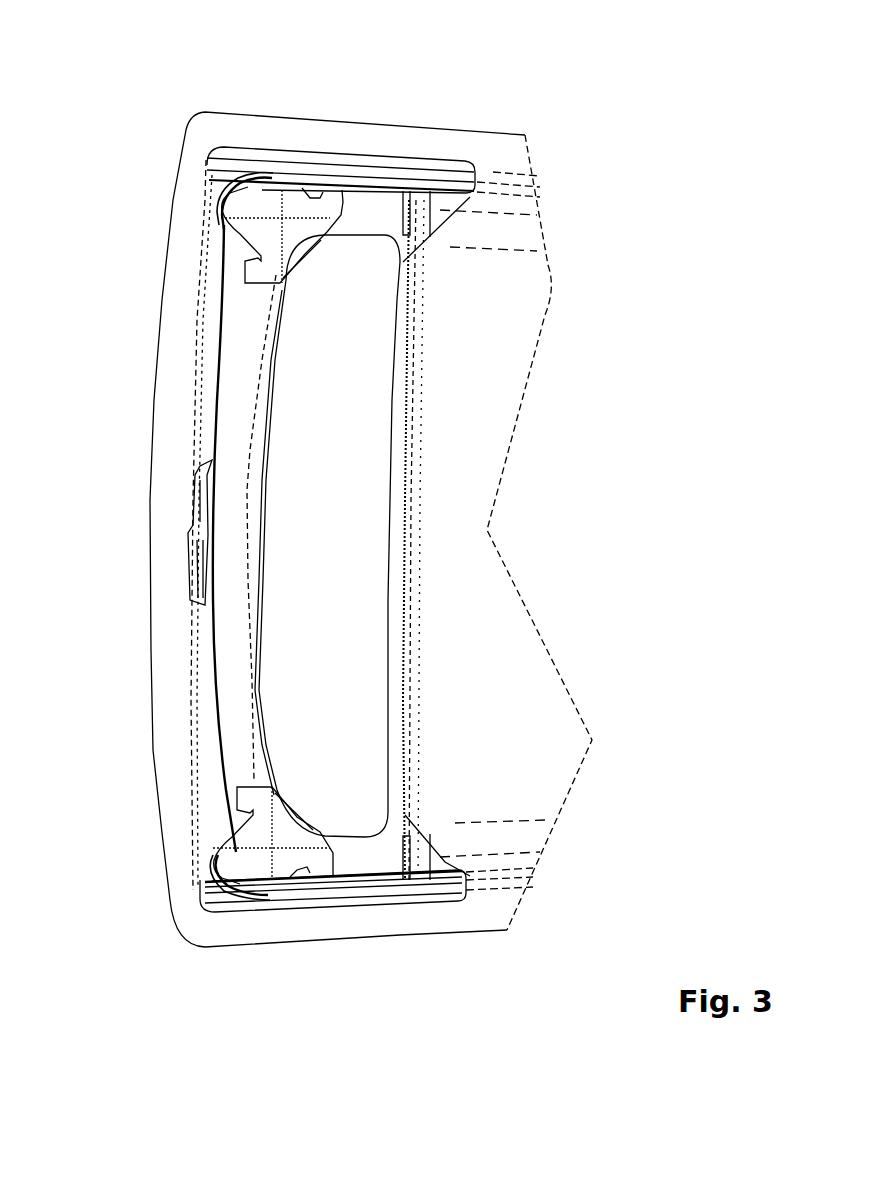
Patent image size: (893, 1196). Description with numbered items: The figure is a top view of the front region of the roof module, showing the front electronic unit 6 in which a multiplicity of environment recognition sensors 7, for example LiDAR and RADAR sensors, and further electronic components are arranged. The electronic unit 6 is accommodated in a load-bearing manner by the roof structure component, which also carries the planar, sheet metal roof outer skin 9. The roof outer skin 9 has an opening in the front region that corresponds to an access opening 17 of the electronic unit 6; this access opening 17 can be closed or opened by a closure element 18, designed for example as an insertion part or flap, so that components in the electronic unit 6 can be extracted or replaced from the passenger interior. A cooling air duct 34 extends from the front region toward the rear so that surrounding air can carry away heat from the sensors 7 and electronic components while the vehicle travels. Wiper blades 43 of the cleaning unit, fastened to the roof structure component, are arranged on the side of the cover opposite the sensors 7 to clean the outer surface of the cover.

The electronic unit 6 is at (220, 687).
The environment recognition sensors 7 is at (255, 224).
The roof outer skin 9 is at (503, 705).
The access opening 17 is at (222, 389).
The closure element 18 is at (340, 702).
The cooling air duct 34 is at (197, 568).
The wiper blades 43 is at (268, 178).